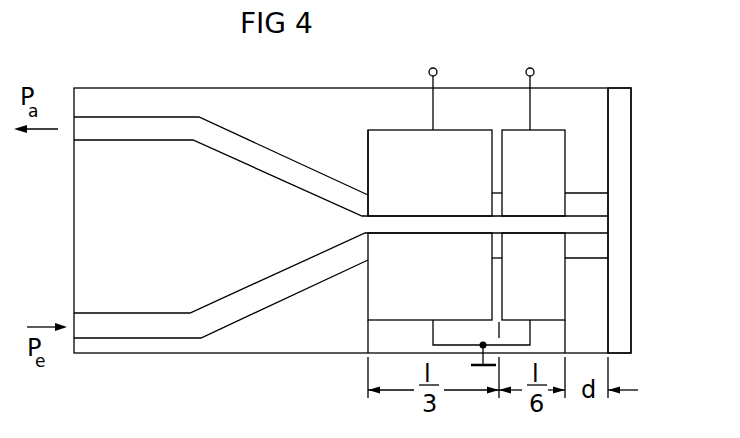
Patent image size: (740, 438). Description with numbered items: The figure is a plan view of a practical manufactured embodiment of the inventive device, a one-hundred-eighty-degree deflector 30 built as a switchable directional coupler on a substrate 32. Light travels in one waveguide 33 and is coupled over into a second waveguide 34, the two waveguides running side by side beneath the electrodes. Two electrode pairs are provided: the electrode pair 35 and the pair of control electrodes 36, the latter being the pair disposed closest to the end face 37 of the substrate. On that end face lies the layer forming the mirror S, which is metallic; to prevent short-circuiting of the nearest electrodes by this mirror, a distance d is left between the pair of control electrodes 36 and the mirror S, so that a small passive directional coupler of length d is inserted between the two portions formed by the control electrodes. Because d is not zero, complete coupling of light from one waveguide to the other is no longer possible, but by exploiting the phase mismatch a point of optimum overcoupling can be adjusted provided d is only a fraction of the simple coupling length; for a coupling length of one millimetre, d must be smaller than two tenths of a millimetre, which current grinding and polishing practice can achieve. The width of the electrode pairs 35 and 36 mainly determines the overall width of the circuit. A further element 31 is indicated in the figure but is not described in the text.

The 180° deflector 30 is at (173, 79).
The piezoelectric actuator 31 is at (363, 144).
The substrate 32 is at (141, 265).
The waveguide 33 is at (160, 330).
The second waveguide 34 is at (103, 133).
The electrode pair 35 is at (401, 130).
The pair of control electrodes 36 is at (555, 130).
The end face 37 is at (612, 300).
The mirror layer S is at (626, 238).